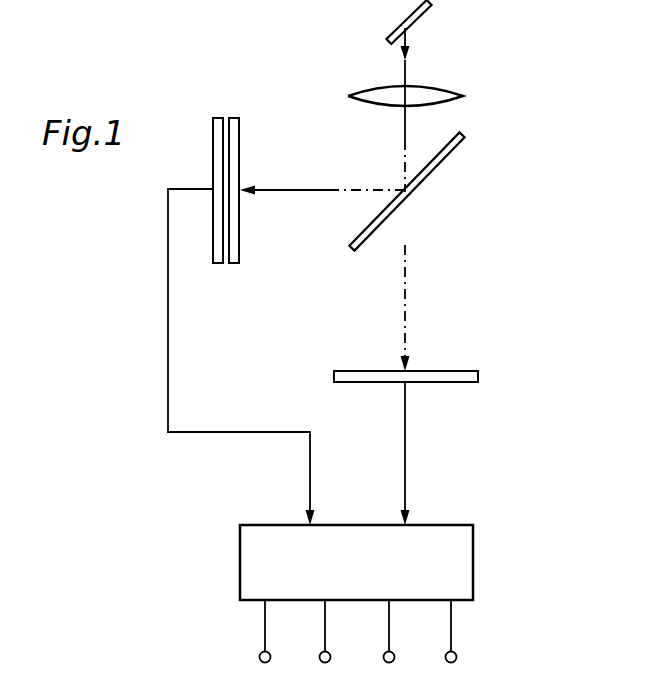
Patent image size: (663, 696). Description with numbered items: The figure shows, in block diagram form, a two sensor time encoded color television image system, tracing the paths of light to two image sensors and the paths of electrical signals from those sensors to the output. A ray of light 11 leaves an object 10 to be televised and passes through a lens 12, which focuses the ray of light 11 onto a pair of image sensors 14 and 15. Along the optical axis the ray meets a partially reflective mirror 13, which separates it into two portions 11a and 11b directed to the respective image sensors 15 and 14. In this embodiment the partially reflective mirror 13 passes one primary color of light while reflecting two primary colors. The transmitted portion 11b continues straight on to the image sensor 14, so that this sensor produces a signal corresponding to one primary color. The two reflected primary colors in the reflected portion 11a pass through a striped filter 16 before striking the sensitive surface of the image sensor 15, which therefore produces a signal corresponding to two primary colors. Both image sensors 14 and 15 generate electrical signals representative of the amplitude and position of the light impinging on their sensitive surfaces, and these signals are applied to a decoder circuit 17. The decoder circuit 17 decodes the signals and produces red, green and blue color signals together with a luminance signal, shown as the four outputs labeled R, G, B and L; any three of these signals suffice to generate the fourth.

The object 10 is at (412, 22).
The ray of light 11 is at (405, 69).
The reflected ray portion 11a is at (272, 191).
The transmitted ray portion 11b is at (407, 265).
The lens 12 is at (348, 95).
The partially reflective mirror 13 is at (462, 138).
The image sensor 14 is at (478, 377).
The image sensor 15 is at (218, 118).
The striped filter 16 is at (234, 118).
The decoder circuit 17 is at (473, 558).